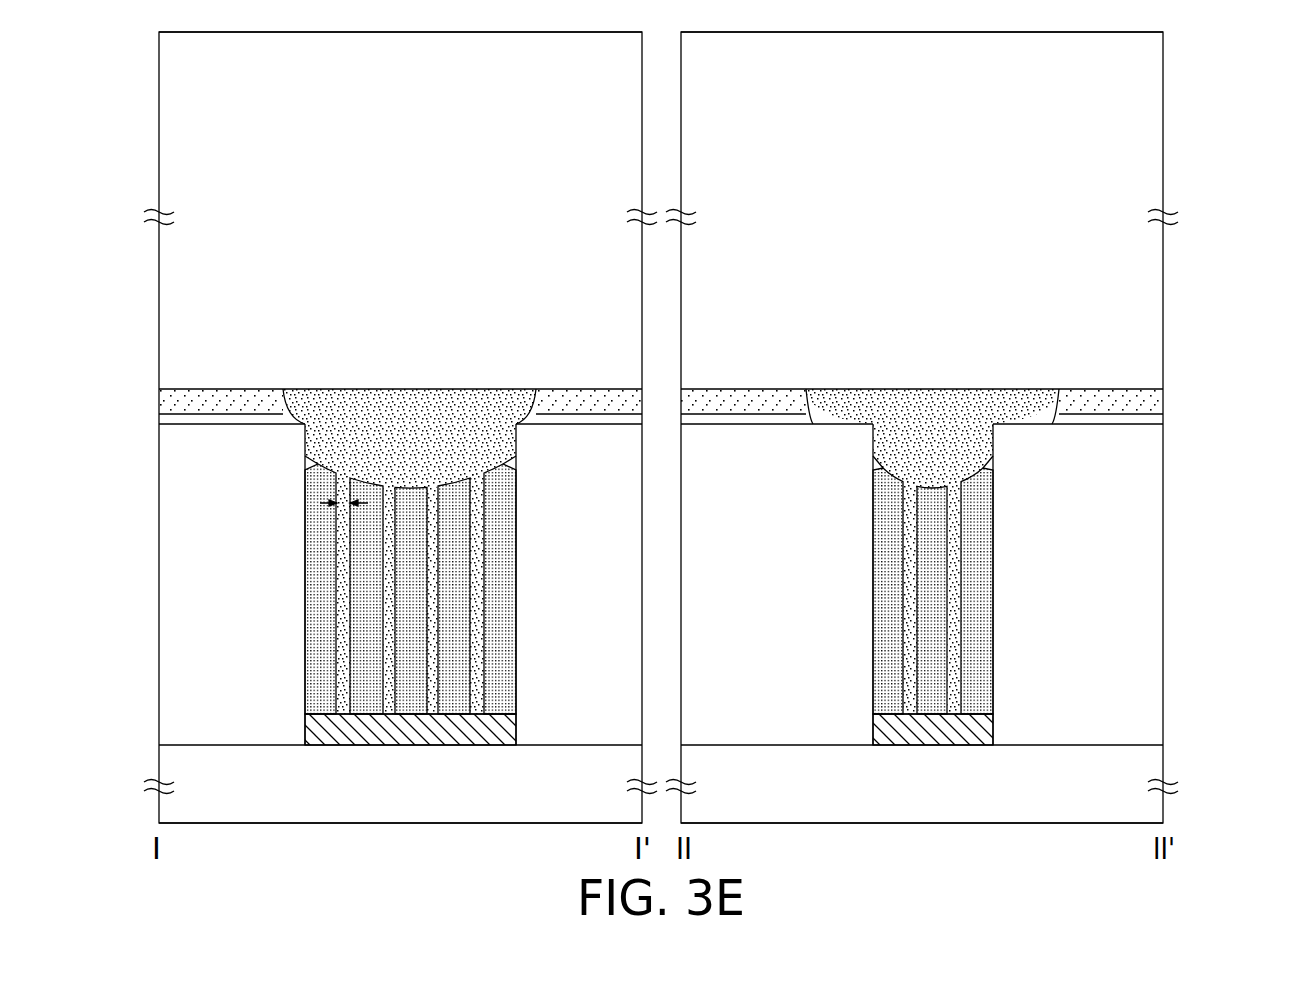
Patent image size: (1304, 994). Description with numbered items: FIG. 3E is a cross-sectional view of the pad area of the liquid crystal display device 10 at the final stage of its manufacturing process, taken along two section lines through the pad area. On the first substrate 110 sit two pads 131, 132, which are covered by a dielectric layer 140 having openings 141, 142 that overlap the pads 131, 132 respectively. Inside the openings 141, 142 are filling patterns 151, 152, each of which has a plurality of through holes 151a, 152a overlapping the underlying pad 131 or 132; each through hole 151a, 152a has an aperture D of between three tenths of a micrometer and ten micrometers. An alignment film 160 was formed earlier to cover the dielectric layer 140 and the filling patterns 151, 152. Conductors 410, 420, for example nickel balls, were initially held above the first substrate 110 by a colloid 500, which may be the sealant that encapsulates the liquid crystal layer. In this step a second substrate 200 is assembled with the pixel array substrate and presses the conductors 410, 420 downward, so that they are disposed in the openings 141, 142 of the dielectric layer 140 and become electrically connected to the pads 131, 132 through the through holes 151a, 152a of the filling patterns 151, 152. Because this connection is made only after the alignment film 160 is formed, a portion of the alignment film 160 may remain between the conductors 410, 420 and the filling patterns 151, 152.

The liquid crystal display device 10 is at (1288, 877).
The first substrate 110 is at (253, 817).
The pad 131 is at (410, 737).
The pad 132 is at (952, 738).
The dielectric layer 140 is at (161, 584).
The opening 141 is at (305, 573).
The opening 142 is at (993, 570).
The filling pattern 151 is at (368, 707).
The filling pattern 152 is at (935, 712).
The through hole 151a is at (338, 662).
The through hole 152a is at (960, 661).
The alignment film 160 is at (305, 467).
The second substrate 200 is at (161, 142).
The conductor 410 is at (362, 413).
The conductor 420 is at (968, 413).
The colloid 500 is at (161, 392).
The aperture D is at (345, 510).